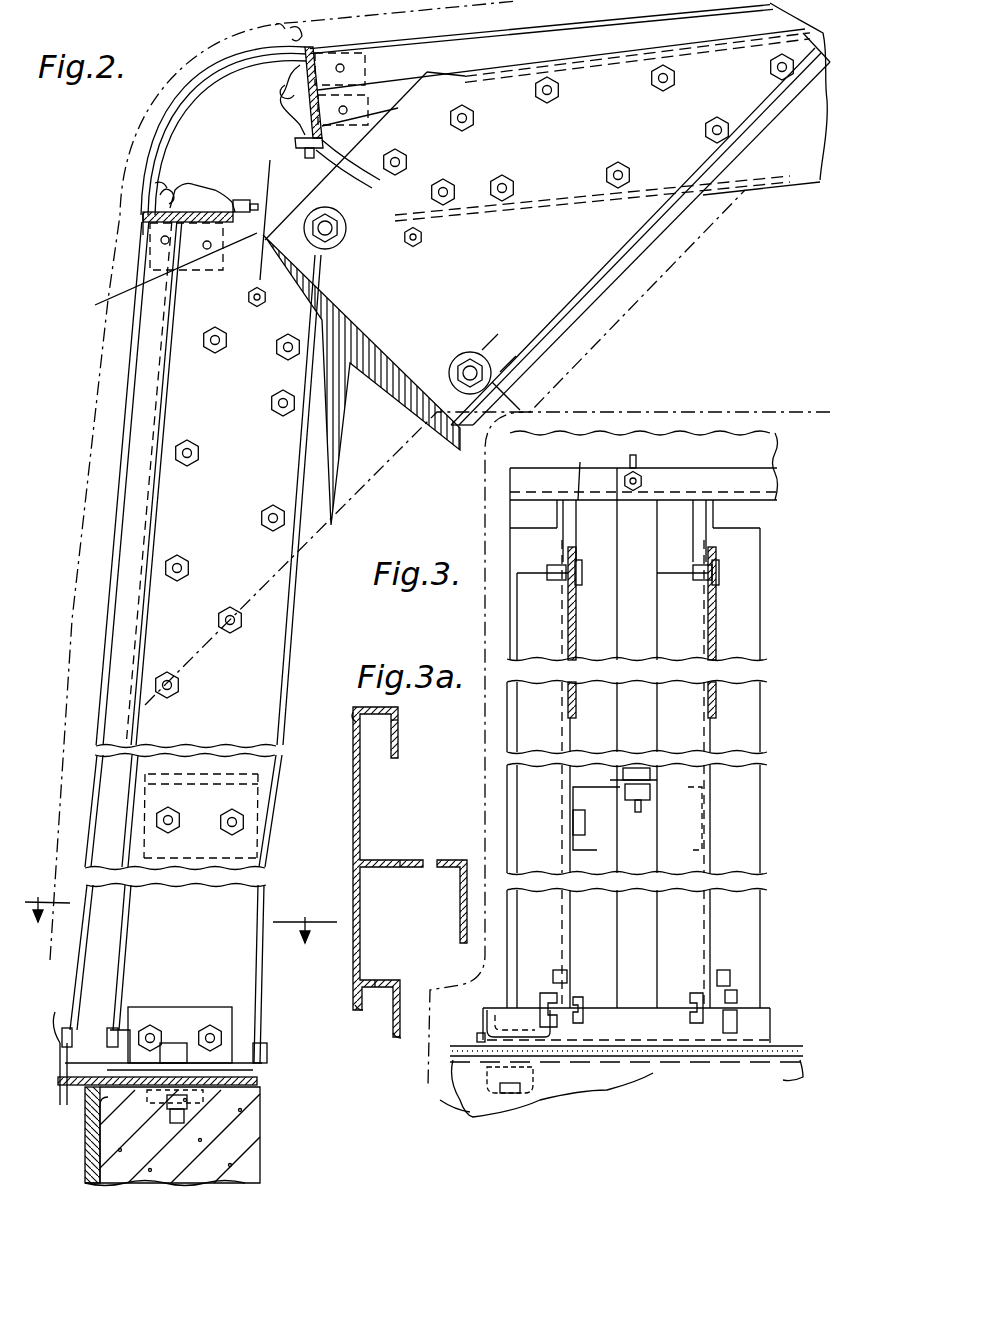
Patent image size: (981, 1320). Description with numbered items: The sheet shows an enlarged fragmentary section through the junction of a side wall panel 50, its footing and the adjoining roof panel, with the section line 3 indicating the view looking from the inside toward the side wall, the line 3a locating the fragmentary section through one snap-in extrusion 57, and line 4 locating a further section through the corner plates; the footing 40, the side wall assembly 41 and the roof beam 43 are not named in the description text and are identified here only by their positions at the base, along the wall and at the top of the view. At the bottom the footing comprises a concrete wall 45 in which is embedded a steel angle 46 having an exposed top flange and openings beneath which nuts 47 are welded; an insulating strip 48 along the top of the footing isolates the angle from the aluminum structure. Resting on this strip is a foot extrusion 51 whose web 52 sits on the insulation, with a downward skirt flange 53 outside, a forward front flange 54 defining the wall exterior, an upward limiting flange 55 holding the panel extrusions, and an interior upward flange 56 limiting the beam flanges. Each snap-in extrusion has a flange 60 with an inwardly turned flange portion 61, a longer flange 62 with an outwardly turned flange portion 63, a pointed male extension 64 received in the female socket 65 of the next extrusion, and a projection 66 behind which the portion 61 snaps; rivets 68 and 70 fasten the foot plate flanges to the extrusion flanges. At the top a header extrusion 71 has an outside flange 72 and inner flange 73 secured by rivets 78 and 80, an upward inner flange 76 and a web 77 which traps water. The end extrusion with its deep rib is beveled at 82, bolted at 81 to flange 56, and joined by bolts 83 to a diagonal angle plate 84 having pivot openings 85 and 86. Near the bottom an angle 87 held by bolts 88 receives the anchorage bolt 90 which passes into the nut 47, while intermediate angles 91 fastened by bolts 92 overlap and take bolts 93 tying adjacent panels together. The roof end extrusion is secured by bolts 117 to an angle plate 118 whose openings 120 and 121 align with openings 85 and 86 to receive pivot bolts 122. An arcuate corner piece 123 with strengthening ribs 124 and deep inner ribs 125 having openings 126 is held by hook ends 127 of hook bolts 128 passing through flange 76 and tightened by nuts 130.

In FIG. 2, the section line 3— 3 is at (273, 173).
In FIG. 2, the section line 3a— 3a is at (180, 904).
In FIG. 2, the section line 4— 4 is at (152, 735).
In FIG. 2, the concrete foundation 40 is at (255, 1160).
In FIG. 3, the concrete foundation 40 is at (470, 1109).
In FIG. 2, the wall panel assembly 41 is at (100, 662).
In FIG. 2, the header beam 43 is at (460, 32).
In FIG. 2, the concrete wall 45 is at (115, 1158).
In FIG. 3, the concrete wall 45 is at (505, 1096).
In FIG. 2, the steel angle 46 is at (85, 1131).
In FIG. 3, the steel angle 46 is at (458, 1066).
In FIG. 2, the nuts 47 is at (190, 1110).
In FIG. 3, the nuts 47 is at (522, 1085).
In FIG. 2, the insulating strip 48 is at (258, 1080).
In FIG. 3, the insulating strip 48 is at (790, 1045).
In FIG. 2, the panel 50 is at (113, 585).
In FIG. 3, the panel 50 is at (762, 712).
In FIG. 2, the foot extrusion 51 is at (66, 1078).
In FIG. 2, the web 52 is at (170, 1030).
In FIG. 2, the skirt flange 53 is at (62, 1095).
In FIG. 2, the front flange 54 is at (55, 1015).
In FIG. 2, the inwardly limiting flange 55 is at (120, 1032).
In FIG. 2, the interior upwardly extending flange 56 is at (258, 1045).
In FIG. 3, the interior upwardly extending flange 56 is at (640, 1013).
In FIG. 2, the snap-in extrusion 57 is at (115, 527).
In FIG. 3A, the snap-in extrusion 57 is at (353, 878).
In FIG. 3A, the flange 60 is at (384, 716).
In FIG. 3A, the inwardly turned flange portion 61 is at (399, 717).
In FIG. 3A, the flange 62 is at (393, 982).
In FIG. 3, the outwardly turned flange portion 63 is at (445, 987).
In FIG. 3A, the male snap-in extension 64 is at (358, 1008).
In FIG. 3A, the female snap-in socket 65 is at (352, 712).
In FIG. 3A, the snap-in projection 66 is at (397, 1038).
In FIG. 2, the rivet 68 is at (76, 1035).
In FIG. 2, the rivet 70 is at (117, 1028).
In FIG. 2, the header extrusion 71 is at (150, 213).
In FIG. 2, the outside flange 72 is at (143, 230).
In FIG. 2, the inner flange 73 is at (420, 96).
In FIG. 2, the inner flange 76 is at (378, 133).
In FIG. 2, the web 77 is at (243, 250).
In FIG. 2, the rivet 78 is at (190, 230).
In FIG. 2, the rivet 80 is at (185, 262).
In FIG. 2, the bolt 81 is at (268, 1050).
In FIG. 2, the bevel 82 is at (300, 285).
In FIG. 2, the bolt 83 is at (272, 408).
In FIG. 3, the bolt 83 is at (582, 570).
In FIG. 2, the angle plate 84 is at (420, 470).
In FIG. 3, the angle plate 84 is at (578, 624).
In FIG. 2, the pivot opening 85 is at (320, 222).
In FIG. 2, the pivot opening 86 is at (495, 380).
In FIG. 2, the angle 87 is at (195, 1010).
In FIG. 3, the angle 87 is at (567, 980).
In FIG. 2, the bolt 88 is at (222, 1036).
In FIG. 3, the bolt 88 is at (587, 995).
In FIG. 2, the bolt 90 is at (170, 1040).
In FIG. 3, the bolt 90 is at (507, 1007).
In FIG. 2, the angle 91 is at (255, 815).
In FIG. 3, the angle 91 is at (573, 845).
In FIG. 2, the bolt 92 is at (228, 826).
In FIG. 3, the bolt 92 is at (573, 820).
In FIG. 3, the bolt 93 is at (630, 768).
In FIG. 2, the bolt 117 is at (704, 128).
In FIG. 2, the angle plate 118 is at (537, 136).
In FIG. 2, the opening 120 is at (402, 235).
In FIG. 2, the opening 121 is at (470, 362).
In FIG. 2, the pivot bolt 122 is at (336, 240).
In FIG. 2, the arcuate corner piece 123 is at (230, 138).
In FIG. 2, the strengthening rib 124 is at (222, 80).
In FIG. 2, the deep inner rib 125 is at (160, 190).
In FIG. 2, the opening 126 is at (195, 188).
In FIG. 2, the hook end 127 is at (235, 181).
In FIG. 2, the hook bolt 128 is at (277, 142).
In FIG. 2, the nut 130 is at (370, 170).